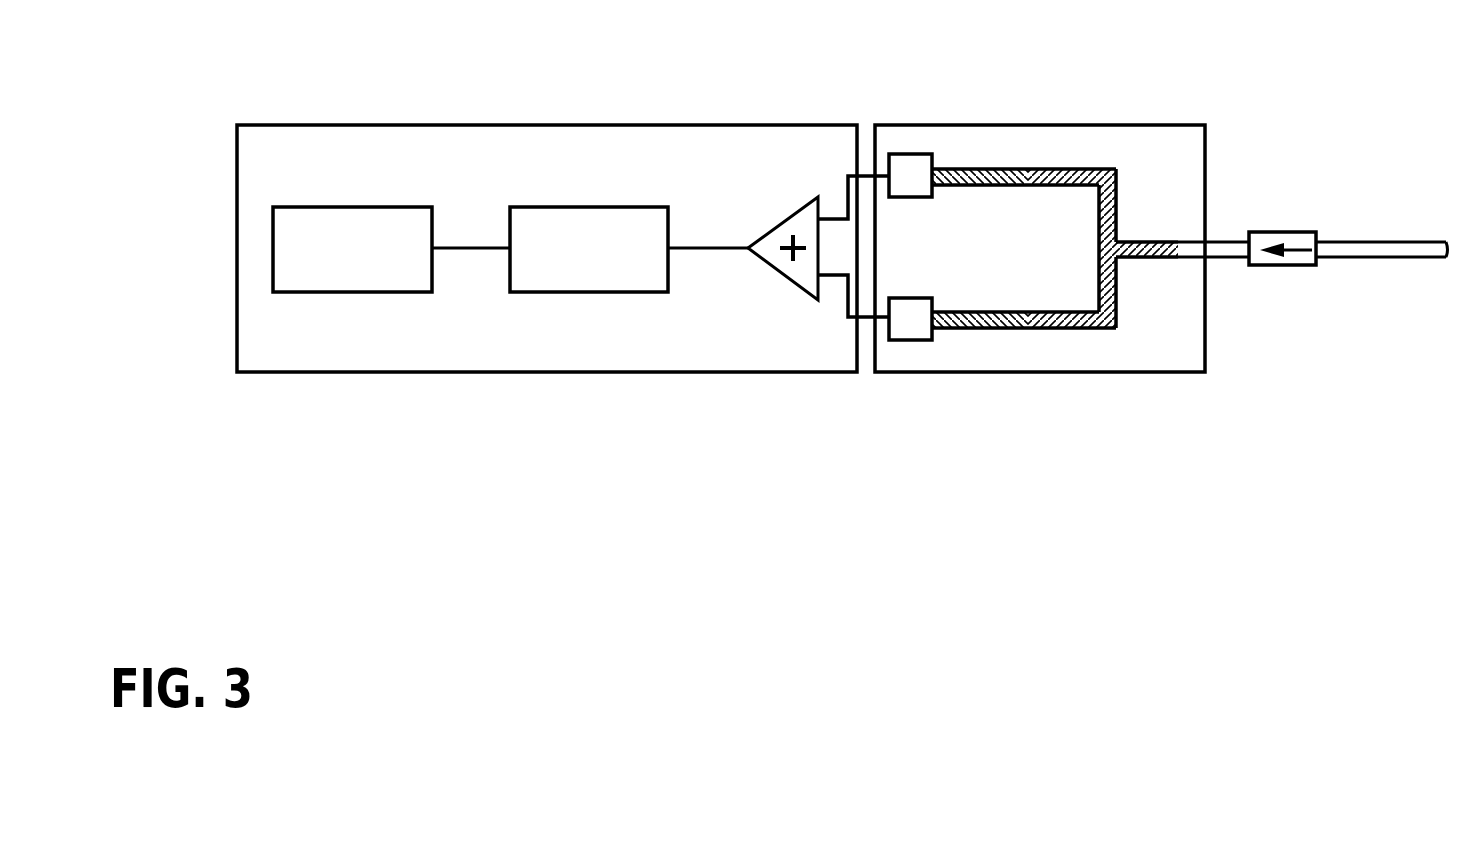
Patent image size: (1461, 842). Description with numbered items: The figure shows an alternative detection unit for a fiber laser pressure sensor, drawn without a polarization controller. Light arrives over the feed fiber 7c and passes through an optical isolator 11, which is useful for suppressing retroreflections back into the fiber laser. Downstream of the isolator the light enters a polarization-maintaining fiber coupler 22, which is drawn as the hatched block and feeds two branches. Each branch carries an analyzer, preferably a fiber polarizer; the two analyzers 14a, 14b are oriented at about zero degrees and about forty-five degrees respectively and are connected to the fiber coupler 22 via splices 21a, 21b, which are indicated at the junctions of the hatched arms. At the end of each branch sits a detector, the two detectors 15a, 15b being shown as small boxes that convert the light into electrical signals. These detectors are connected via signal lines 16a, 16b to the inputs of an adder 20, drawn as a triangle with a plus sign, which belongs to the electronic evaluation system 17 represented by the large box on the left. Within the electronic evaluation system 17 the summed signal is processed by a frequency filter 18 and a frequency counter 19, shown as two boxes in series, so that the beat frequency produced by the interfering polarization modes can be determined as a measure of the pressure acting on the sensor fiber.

The electronic evaluation system 17 is at (295, 348).
The frequency filter 18 is at (567, 267).
The frequency counter 19 is at (325, 267).
The adder 20 is at (773, 245).
The signal line 16a is at (863, 176).
The signal line 16b is at (864, 317).
The detector 15a is at (902, 173).
The detector 15b is at (908, 323).
The analyzer 14a is at (957, 172).
The analyzer 14b is at (980, 328).
The splice 21a is at (1033, 172).
The splice 21b is at (1037, 328).
The polarization-maintaining fiber coupler 22 is at (1110, 247).
The optical isolator 11 is at (1302, 241).
The feed fiber 7c is at (1376, 249).